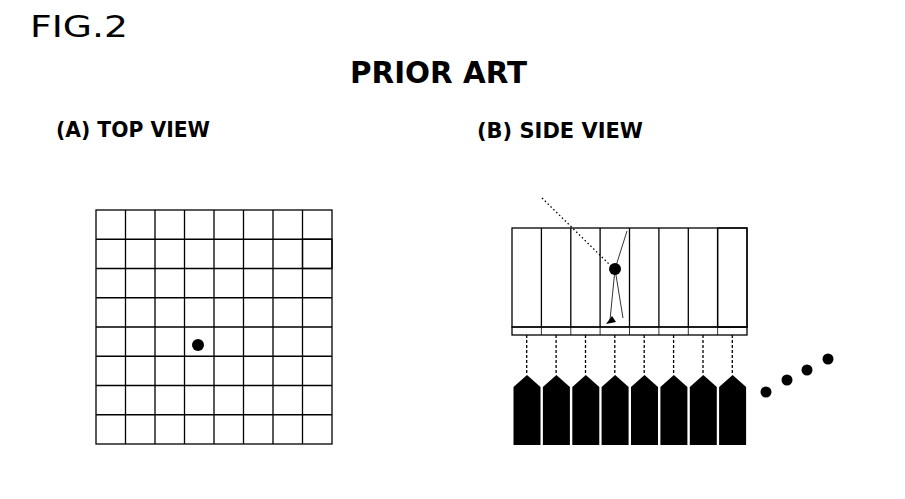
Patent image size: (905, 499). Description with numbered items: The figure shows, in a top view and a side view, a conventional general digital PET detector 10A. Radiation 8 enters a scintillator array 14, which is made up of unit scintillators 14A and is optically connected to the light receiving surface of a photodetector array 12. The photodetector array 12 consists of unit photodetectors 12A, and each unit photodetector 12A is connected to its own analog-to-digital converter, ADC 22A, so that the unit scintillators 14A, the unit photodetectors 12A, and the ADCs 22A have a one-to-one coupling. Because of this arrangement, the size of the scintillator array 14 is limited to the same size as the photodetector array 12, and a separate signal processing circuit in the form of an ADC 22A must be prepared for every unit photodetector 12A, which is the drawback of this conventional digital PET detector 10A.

The digital PET detector 10A is at (250, 196).
The scintillator array 14 is at (336, 215).
The unit scintillator 14A is at (326, 250).
The unit photodetector 12A is at (750, 333).
The photodetector array 12 is at (742, 343).
The ADC 22A is at (747, 418).
The radiation 8 is at (563, 216).